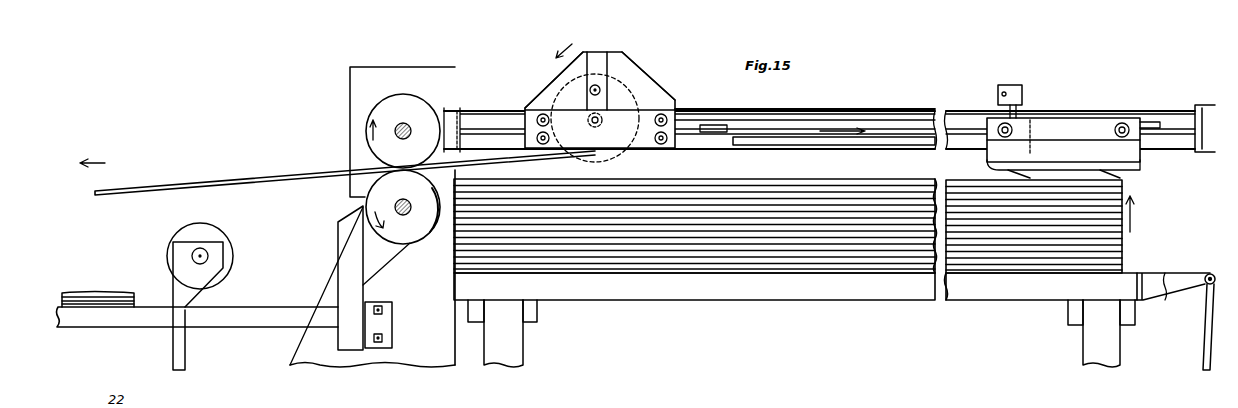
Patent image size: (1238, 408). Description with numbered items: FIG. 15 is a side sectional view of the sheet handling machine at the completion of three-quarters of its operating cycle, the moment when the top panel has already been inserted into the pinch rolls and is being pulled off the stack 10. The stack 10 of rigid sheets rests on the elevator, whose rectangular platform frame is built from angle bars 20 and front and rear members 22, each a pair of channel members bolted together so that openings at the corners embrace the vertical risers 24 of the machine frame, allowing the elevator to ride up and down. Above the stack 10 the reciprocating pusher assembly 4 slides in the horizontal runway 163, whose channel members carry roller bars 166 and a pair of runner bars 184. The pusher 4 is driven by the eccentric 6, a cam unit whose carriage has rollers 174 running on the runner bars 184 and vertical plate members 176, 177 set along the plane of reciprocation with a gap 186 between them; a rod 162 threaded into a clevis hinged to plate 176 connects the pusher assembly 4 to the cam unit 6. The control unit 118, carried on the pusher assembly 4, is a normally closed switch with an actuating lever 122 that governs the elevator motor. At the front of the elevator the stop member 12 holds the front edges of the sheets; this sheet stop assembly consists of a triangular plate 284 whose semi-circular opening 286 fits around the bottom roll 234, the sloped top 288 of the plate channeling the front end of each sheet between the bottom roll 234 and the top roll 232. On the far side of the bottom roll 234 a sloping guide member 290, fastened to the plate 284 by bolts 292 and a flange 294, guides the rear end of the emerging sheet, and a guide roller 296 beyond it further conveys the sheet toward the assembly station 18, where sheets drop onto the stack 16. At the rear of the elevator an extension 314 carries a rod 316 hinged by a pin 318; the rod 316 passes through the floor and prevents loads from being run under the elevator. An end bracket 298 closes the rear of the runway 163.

The reciprocating pusher assembly 4 is at (1072, 113).
The eccentric (cam unit) 6 is at (616, 41).
The stack 10 is at (1132, 228).
The stop member (sheet stop assembly) 12 is at (437, 375).
The stack 16 is at (123, 292).
The assembly station 18 is at (114, 337).
The angle bars (side members) 20 is at (843, 300).
The front and rear members 22 is at (535, 320).
The vertical risers 24 is at (515, 352).
The control unit 118 is at (1029, 85).
The actuating lever 122 is at (998, 95).
The rod 162 is at (740, 120).
The horizontal runway 163 is at (872, 104).
The roller bars 166 is at (848, 146).
The rollers 174 is at (661, 145).
The vertical plate member 176 is at (643, 94).
The vertical plate member 177 is at (531, 103).
The runner bars 184 is at (478, 126).
The slot 186 is at (596, 49).
The top roll 232 is at (392, 98).
The bottom roll 234 is at (365, 202).
The triangular plate 284 is at (398, 370).
The semi-circular opening 286 is at (426, 240).
The top of plate 288 is at (436, 182).
The sloping guide member 290 is at (338, 253).
The bolts 292 is at (383, 308).
The flange 294 is at (385, 314).
The guide roller 296 is at (204, 230).
The end bracket 298 is at (1205, 155).
The extension 314 is at (1153, 278).
The rod 316 is at (1203, 330).
The pin 318 is at (1204, 284).